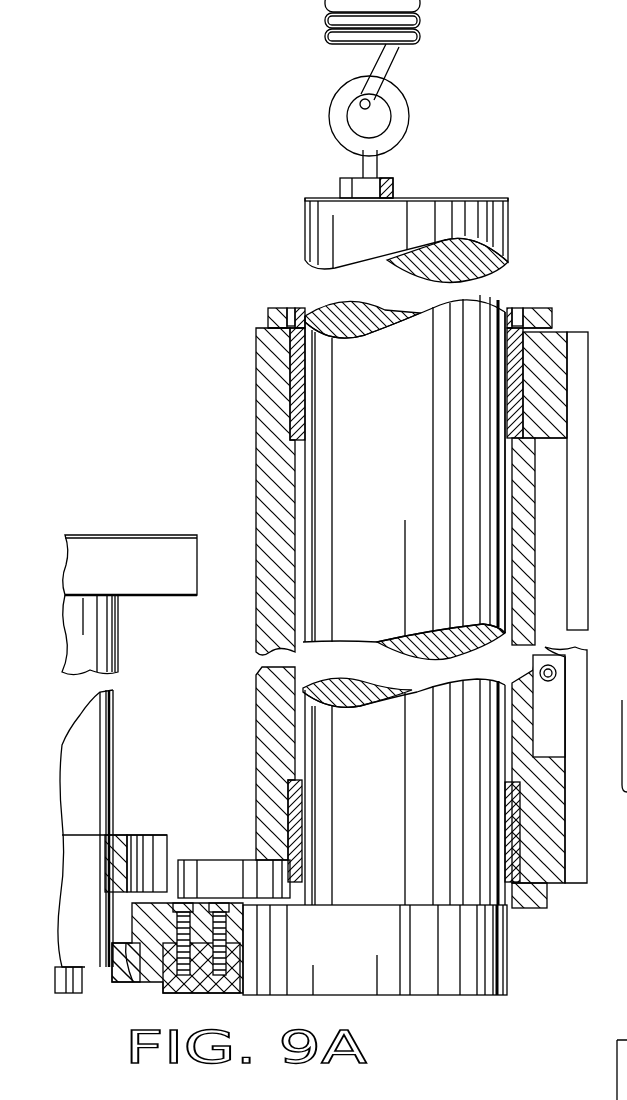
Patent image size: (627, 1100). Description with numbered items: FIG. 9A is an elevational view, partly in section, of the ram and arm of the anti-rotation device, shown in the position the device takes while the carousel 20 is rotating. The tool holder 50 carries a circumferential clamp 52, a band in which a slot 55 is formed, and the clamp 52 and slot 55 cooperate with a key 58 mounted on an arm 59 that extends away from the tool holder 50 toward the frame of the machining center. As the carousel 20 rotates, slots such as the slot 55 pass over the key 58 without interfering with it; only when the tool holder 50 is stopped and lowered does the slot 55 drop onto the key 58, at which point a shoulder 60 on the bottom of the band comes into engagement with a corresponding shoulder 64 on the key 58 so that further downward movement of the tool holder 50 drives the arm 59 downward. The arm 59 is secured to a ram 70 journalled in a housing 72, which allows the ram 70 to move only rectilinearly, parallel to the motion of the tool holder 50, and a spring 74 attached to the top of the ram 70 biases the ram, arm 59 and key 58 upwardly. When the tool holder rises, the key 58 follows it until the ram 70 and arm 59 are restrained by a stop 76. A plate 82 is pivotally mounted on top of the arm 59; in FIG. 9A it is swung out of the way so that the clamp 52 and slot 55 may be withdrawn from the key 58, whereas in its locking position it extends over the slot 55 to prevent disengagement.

The carousel 20 is at (172, 541).
The tool holder 50 is at (112, 756).
The circumferential clamp 52 is at (125, 838).
The slot 55 is at (148, 858).
The key 58 is at (158, 975).
The arm 59 is at (397, 978).
The shoulder 60 is at (118, 898).
The shoulder 64 is at (128, 983).
The ram 70 is at (394, 461).
The housing 72 is at (266, 371).
The spring 74 is at (422, 36).
The retainer ring 76 is at (533, 908).
The plate 82 is at (212, 868).